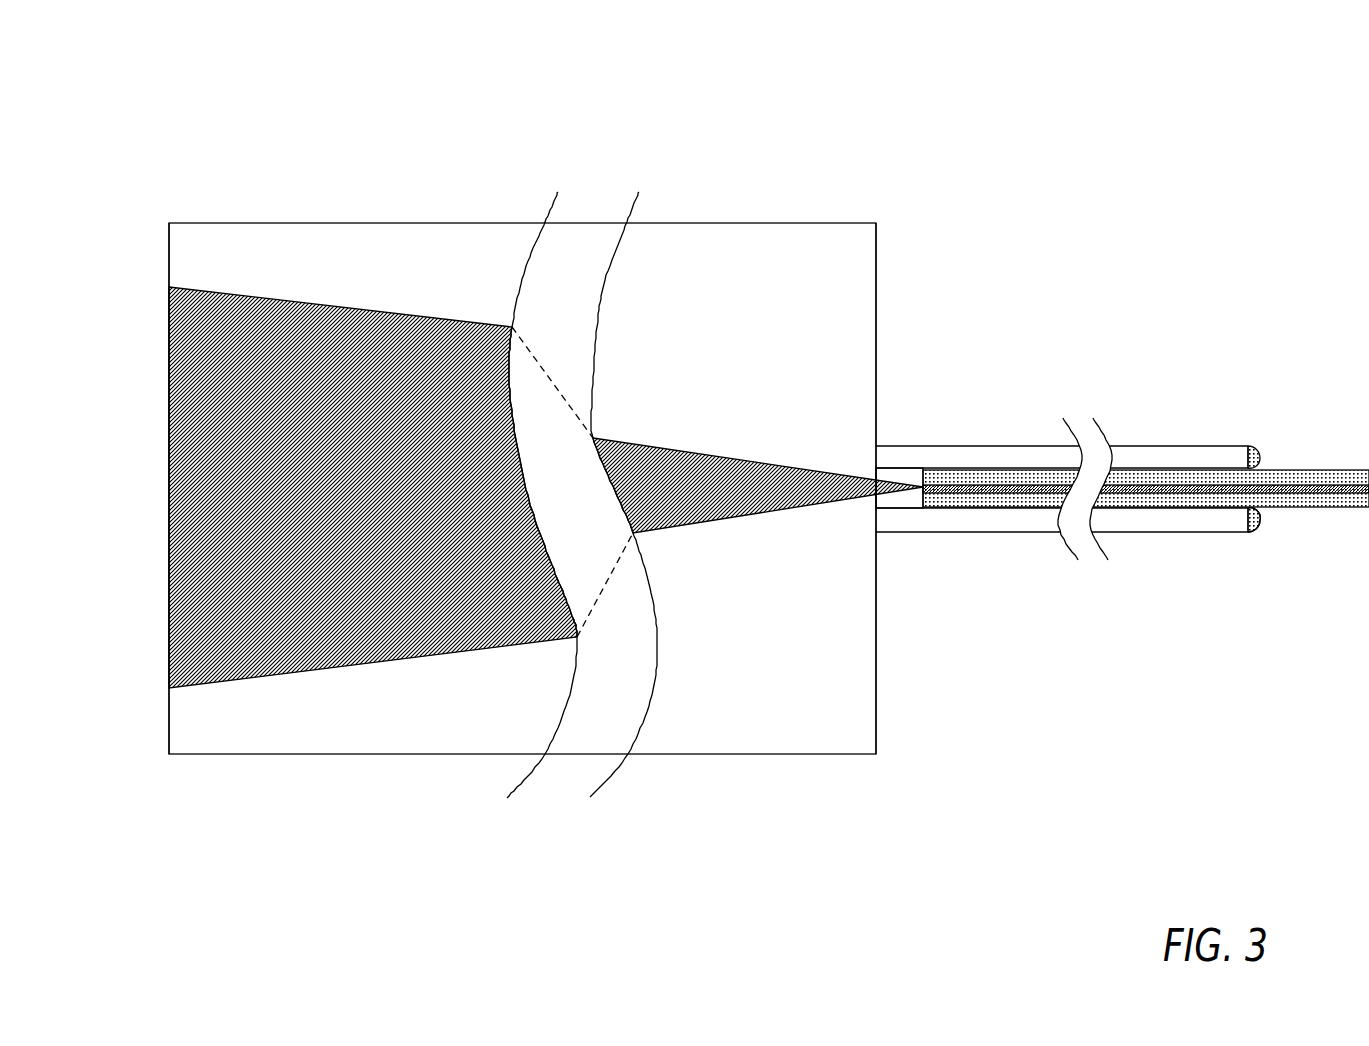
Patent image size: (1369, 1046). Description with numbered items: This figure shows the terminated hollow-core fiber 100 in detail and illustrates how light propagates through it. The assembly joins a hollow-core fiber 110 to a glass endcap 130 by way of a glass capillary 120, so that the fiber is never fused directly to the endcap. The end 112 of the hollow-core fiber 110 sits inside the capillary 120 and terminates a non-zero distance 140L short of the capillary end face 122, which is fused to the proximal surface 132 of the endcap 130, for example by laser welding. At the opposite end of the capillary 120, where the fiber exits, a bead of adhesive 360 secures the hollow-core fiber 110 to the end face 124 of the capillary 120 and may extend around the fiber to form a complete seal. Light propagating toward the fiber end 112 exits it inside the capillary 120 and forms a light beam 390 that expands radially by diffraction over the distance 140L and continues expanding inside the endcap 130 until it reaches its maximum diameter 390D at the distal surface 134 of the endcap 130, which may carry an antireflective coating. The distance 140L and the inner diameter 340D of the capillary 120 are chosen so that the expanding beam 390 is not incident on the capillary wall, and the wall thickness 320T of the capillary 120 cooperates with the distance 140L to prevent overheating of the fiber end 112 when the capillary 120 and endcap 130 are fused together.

The terminated hollow-core fiber 100 is at (197, 82).
The hollow-core fiber 110 is at (1146, 454).
The end of hollow-core fiber 112 is at (938, 477).
The capillary 120 is at (1145, 446).
The end face of capillary 122 is at (866, 524).
The end face of capillary 124 is at (1263, 527).
The endcap 130 is at (875, 249).
The proximal surface of endcap 132 is at (886, 632).
The distal surface of endcap 134 is at (160, 722).
The distance 140L is at (923, 457).
The wall thickness of capillary 320T is at (870, 445).
The inner diameter of capillary 340D is at (894, 530).
The adhesive 360 is at (1255, 452).
The light beam 390 is at (362, 307).
The maximum diameter of beam 390D is at (158, 278).